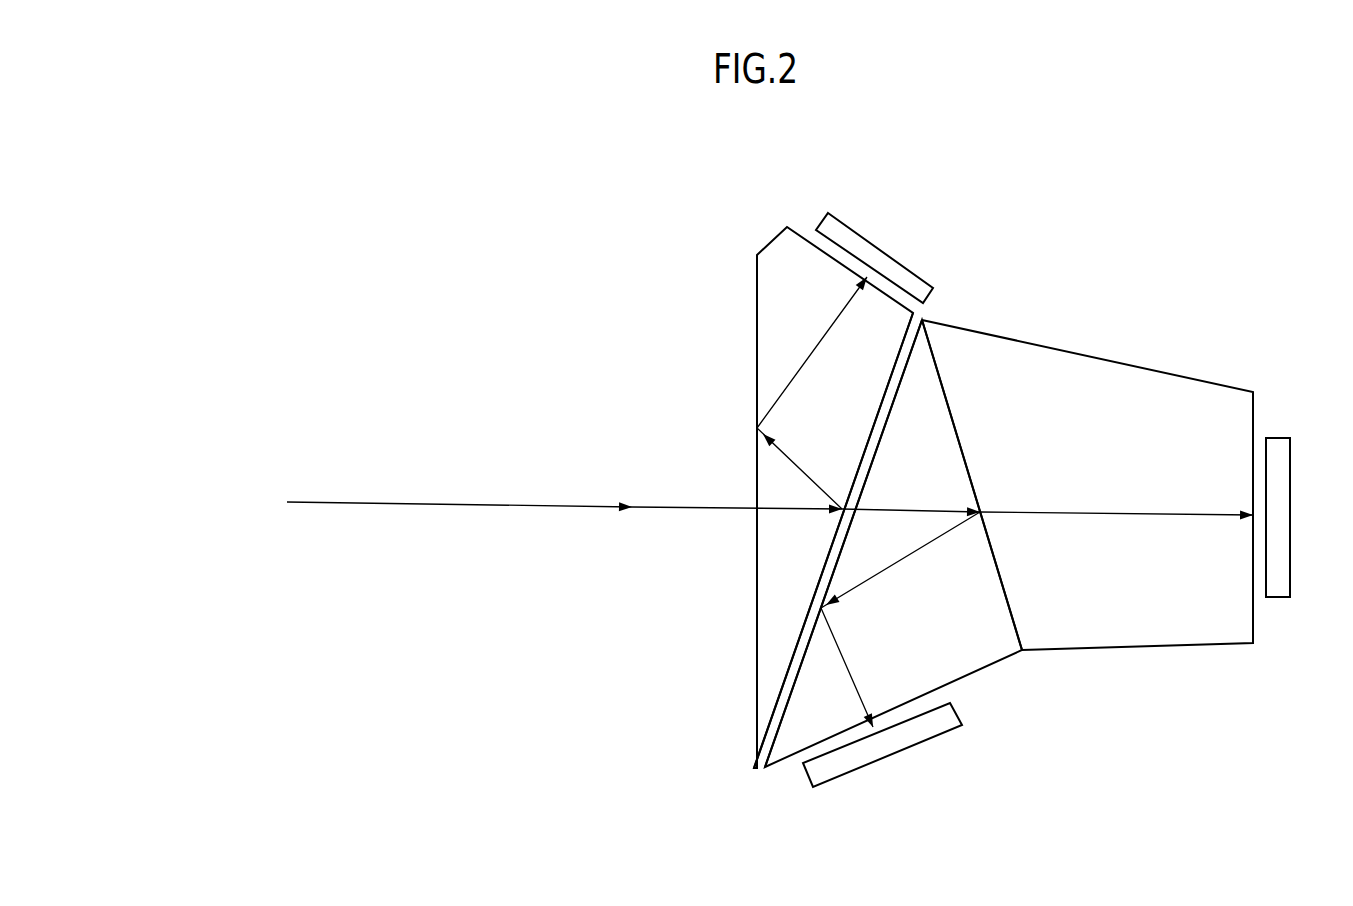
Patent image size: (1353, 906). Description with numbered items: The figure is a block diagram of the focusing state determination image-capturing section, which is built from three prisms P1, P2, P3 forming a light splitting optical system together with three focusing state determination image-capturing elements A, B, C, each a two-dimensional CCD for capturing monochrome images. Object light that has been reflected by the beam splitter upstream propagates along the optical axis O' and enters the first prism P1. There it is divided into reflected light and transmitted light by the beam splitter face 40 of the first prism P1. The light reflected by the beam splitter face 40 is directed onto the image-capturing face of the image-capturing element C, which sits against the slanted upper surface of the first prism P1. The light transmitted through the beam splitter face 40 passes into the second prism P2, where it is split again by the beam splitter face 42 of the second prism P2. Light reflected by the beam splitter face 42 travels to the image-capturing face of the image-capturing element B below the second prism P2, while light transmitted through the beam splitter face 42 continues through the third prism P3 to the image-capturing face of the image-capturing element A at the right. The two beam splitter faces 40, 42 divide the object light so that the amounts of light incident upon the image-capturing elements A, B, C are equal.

The first prism P1 is at (793, 338).
The second prism P2 is at (960, 642).
The third prism P3 is at (1112, 408).
The beam splitter face 40 is at (868, 435).
The beam splitter face 42 is at (967, 463).
The image-capturing element A is at (1280, 512).
The image-capturing element B is at (903, 740).
The image-capturing element C is at (887, 253).
The optical axis O' is at (699, 502).